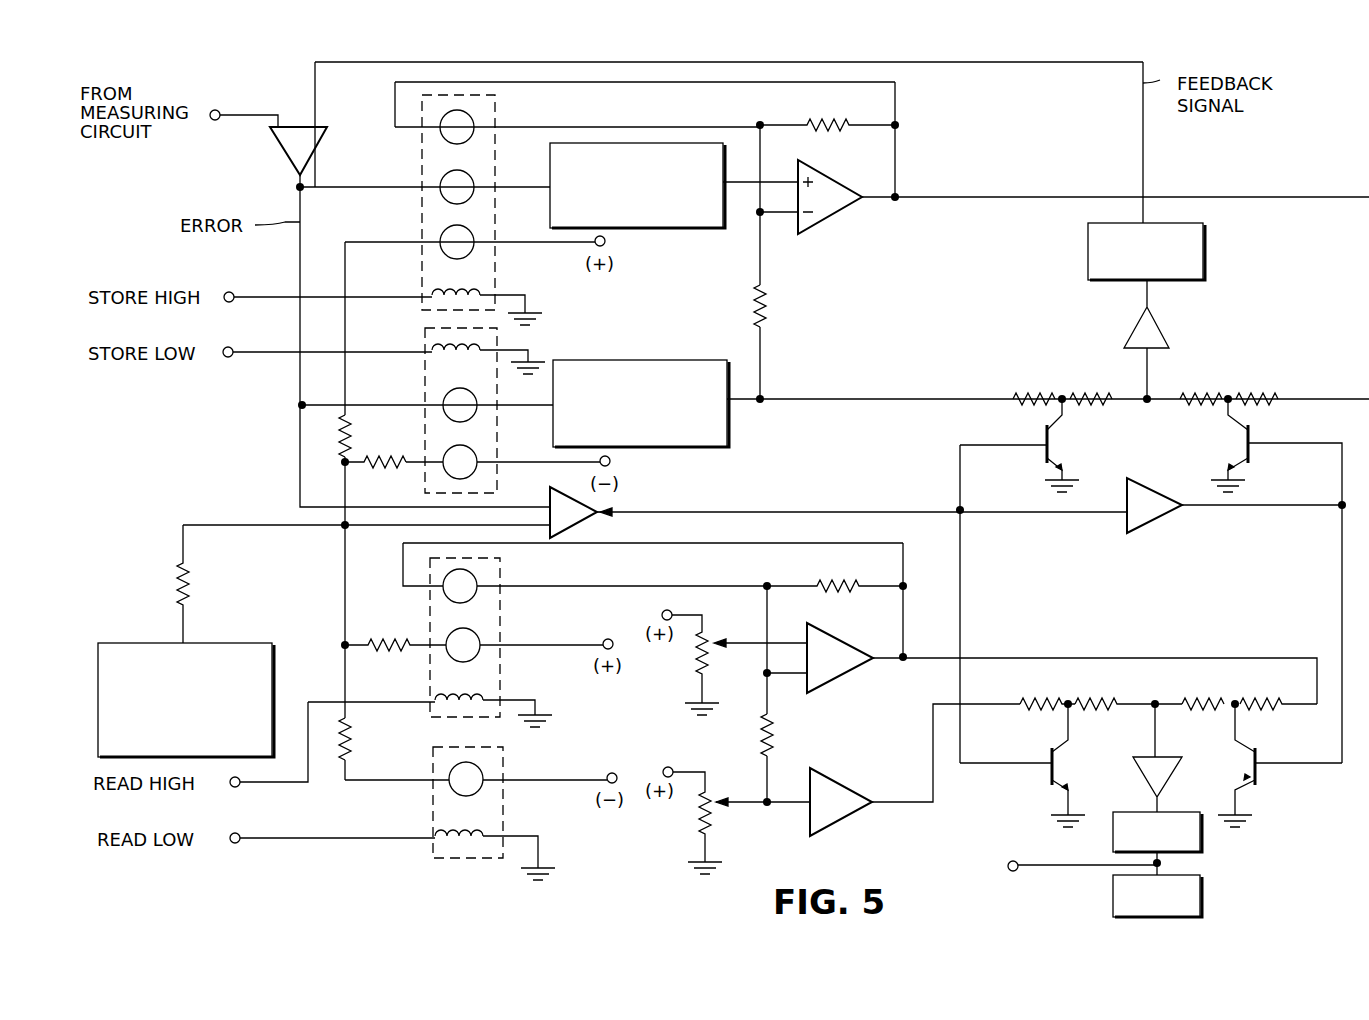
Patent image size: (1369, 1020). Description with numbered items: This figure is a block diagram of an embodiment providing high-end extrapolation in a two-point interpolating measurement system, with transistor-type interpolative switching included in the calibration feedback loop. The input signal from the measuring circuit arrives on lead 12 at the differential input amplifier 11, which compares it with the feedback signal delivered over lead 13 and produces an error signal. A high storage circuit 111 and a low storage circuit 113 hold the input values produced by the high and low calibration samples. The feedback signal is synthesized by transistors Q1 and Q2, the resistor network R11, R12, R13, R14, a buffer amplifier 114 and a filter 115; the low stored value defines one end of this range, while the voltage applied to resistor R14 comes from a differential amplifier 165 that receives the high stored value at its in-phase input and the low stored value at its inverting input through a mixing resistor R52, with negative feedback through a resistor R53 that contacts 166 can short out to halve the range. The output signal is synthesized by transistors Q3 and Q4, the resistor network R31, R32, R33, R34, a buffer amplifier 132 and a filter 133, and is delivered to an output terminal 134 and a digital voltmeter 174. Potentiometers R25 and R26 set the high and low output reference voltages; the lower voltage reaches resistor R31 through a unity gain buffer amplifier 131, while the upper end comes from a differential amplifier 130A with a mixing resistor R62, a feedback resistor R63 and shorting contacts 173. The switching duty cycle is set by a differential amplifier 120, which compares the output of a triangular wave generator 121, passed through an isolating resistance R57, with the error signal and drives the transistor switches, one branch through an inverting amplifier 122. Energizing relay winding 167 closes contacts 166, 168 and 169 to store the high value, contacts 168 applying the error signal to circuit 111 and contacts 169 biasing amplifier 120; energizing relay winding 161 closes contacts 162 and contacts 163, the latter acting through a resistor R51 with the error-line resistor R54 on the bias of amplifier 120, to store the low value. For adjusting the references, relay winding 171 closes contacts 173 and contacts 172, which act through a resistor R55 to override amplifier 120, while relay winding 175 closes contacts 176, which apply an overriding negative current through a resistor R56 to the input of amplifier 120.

The differential input amplifier 11 is at (318, 150).
The input from measuring circuit 12 is at (241, 114).
The lead 13 is at (1013, 62).
The high storage circuit 111 is at (650, 143).
The low storage circuit 113 is at (680, 360).
The buffer amplifier 114 is at (1158, 331).
The filter 115 is at (1205, 241).
The differential amplifier 120 is at (580, 523).
The triangular wave generator 121 is at (131, 643).
The inverting amplifier 122 is at (1156, 522).
The differential amplifier 130A is at (825, 640).
The unity gain buffer amplifier 131 is at (846, 817).
The buffer amplifier 132 is at (1163, 778).
The filter 133 is at (1200, 842).
The output terminal 134 is at (1037, 880).
The relay winding 161 is at (440, 348).
The contacts 162 is at (442, 400).
The contacts 163 is at (440, 456).
The differential amplifier 165 is at (835, 212).
The set of contacts 166 is at (440, 124).
The relay winding 167 is at (440, 292).
The contacts 168 is at (440, 187).
The contacts 169 is at (440, 240).
The relay winding 171 is at (446, 700).
The set of contacts 172 is at (477, 638).
The relay contacts 173 is at (439, 578).
The digital voltmeter 174 is at (1200, 892).
The relay winding 175 is at (445, 834).
The set of contacts 176 is at (447, 778).
The resistor R11 is at (1038, 393).
The resistor R12 is at (1092, 394).
The resistor R13 is at (1204, 394).
The resistor R14 is at (1266, 394).
The potentiometer R25 is at (693, 656).
The potentiometer R26 is at (699, 819).
The resistor R31 is at (1024, 704).
The resistor R32 is at (1100, 684).
The resistor R33 is at (1190, 684).
The resistor R34 is at (1265, 684).
The resistor R51 is at (380, 468).
The mixing resistor R52 is at (768, 293).
The resistor R53 is at (815, 125).
The resistor R54 is at (345, 432).
The resistor R55 is at (403, 639).
The resistor R56 is at (351, 730).
The isolating resistance R57 is at (193, 586).
The mixing resistor R62 is at (776, 731).
The resistor R63 is at (834, 586).
The transistor Q1 is at (1056, 438).
The transistor Q2 is at (1242, 442).
The transistor Q3 is at (1046, 787).
The transistor Q4 is at (1256, 791).